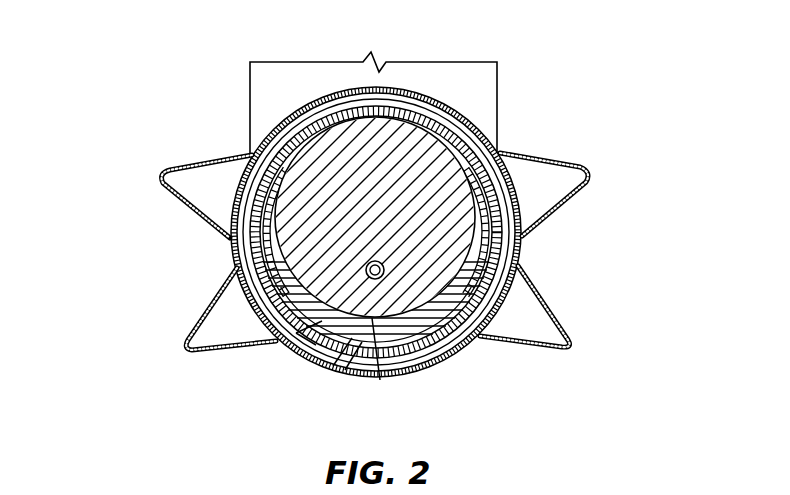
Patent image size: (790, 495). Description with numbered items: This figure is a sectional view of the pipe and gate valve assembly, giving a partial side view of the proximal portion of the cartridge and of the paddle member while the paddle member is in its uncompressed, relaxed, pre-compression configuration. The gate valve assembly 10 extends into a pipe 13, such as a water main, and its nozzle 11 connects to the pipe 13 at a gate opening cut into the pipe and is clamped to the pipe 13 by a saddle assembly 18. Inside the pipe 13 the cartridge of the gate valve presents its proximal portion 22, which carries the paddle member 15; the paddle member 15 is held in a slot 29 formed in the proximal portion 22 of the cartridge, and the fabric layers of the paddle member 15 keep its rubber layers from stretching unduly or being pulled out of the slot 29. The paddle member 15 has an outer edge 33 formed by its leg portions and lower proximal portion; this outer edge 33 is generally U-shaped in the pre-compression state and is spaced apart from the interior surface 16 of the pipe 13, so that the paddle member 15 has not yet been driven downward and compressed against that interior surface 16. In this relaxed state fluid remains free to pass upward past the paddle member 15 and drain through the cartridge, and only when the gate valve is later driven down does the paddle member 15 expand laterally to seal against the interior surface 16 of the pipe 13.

The gate valve assembly 10 is at (150, 247).
The nozzle 11 is at (250, 62).
The pipe 13 is at (243, 258).
The paddle member 15 is at (440, 333).
The interior surface 16 is at (316, 333).
The saddle assembly 18 is at (553, 212).
The proximal portion 22 is at (300, 186).
The slot 29 is at (380, 376).
The outer edge 33 is at (352, 346).